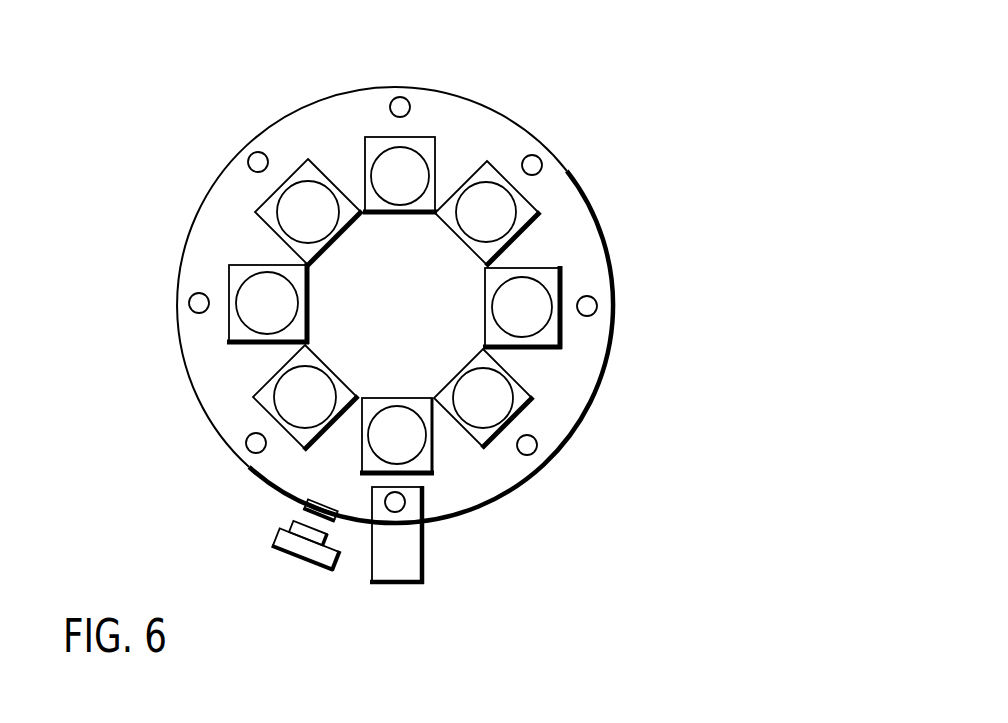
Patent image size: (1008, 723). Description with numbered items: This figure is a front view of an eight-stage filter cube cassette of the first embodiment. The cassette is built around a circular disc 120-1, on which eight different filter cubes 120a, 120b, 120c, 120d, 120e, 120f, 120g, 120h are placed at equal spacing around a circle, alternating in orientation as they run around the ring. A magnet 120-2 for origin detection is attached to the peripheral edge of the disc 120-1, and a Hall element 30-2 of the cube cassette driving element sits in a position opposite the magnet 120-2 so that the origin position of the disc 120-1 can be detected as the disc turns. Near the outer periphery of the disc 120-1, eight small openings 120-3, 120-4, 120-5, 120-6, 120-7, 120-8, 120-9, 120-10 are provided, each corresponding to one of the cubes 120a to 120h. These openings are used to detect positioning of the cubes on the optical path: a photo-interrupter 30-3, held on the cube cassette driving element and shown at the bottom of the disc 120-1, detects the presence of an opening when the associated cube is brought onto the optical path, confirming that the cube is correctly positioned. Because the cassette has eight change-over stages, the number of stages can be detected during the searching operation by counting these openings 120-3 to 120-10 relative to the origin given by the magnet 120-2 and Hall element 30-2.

The disc 120-1 is at (525, 482).
The magnet 120-2 is at (307, 500).
The opening 120-3 is at (403, 97).
The opening 120-4 is at (535, 155).
The opening 120-5 is at (595, 298).
The opening 120-6 is at (538, 448).
The opening 120-7 is at (404, 508).
The opening 120-8 is at (247, 444).
The opening 120-9 is at (192, 296).
The opening 120-10 is at (248, 161).
The cube 120a is at (437, 157).
The cube 120b is at (532, 210).
The cube 120c is at (550, 338).
The cube 120d is at (533, 398).
The cube 120e is at (432, 462).
The cube 120f is at (305, 445).
The cube 120g is at (229, 342).
The cube 120h is at (304, 181).
The Hall element 30-2 is at (306, 566).
The photo-interrupter 30-3 is at (415, 582).